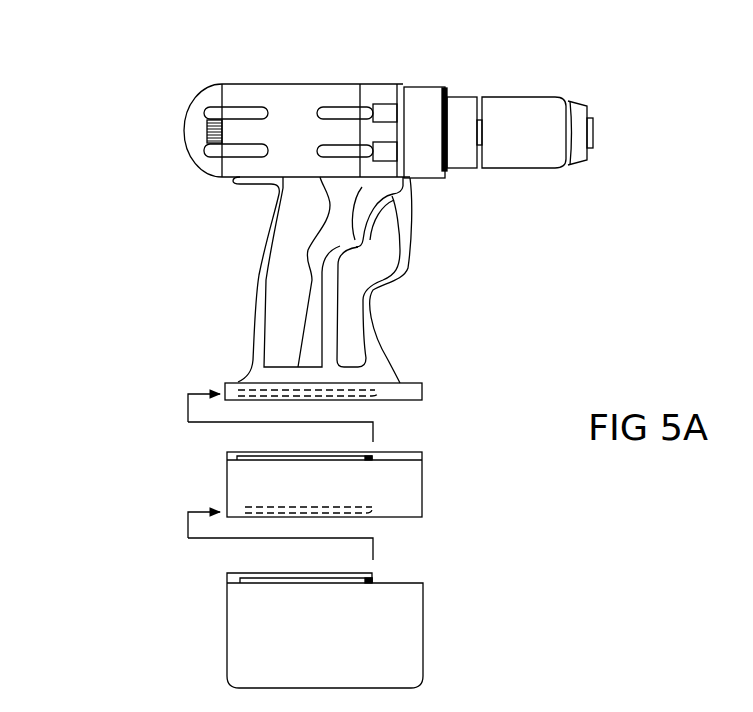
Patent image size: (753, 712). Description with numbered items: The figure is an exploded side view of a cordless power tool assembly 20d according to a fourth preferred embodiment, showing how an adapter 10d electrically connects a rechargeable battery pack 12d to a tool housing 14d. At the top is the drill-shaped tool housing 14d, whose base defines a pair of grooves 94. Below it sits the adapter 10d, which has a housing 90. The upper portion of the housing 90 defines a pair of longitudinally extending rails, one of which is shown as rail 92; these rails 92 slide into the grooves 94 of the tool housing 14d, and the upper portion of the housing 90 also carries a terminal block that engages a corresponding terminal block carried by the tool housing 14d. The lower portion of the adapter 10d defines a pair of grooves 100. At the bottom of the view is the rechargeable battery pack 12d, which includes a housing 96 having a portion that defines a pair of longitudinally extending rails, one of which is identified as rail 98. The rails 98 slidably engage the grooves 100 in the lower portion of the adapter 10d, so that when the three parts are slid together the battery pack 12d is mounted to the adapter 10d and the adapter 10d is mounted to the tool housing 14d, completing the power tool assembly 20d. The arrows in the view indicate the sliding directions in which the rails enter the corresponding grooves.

The power tool assembly 20d is at (146, 105).
The tool housing 14d is at (388, 80).
The grooves 94 is at (385, 385).
The rail 92 is at (374, 459).
The housing 90 is at (415, 488).
The adapter 10d is at (221, 477).
The grooves 100 is at (245, 509).
The rail 98 is at (374, 578).
The rechargeable battery pack 12d is at (429, 626).
The housing 96 is at (412, 672).